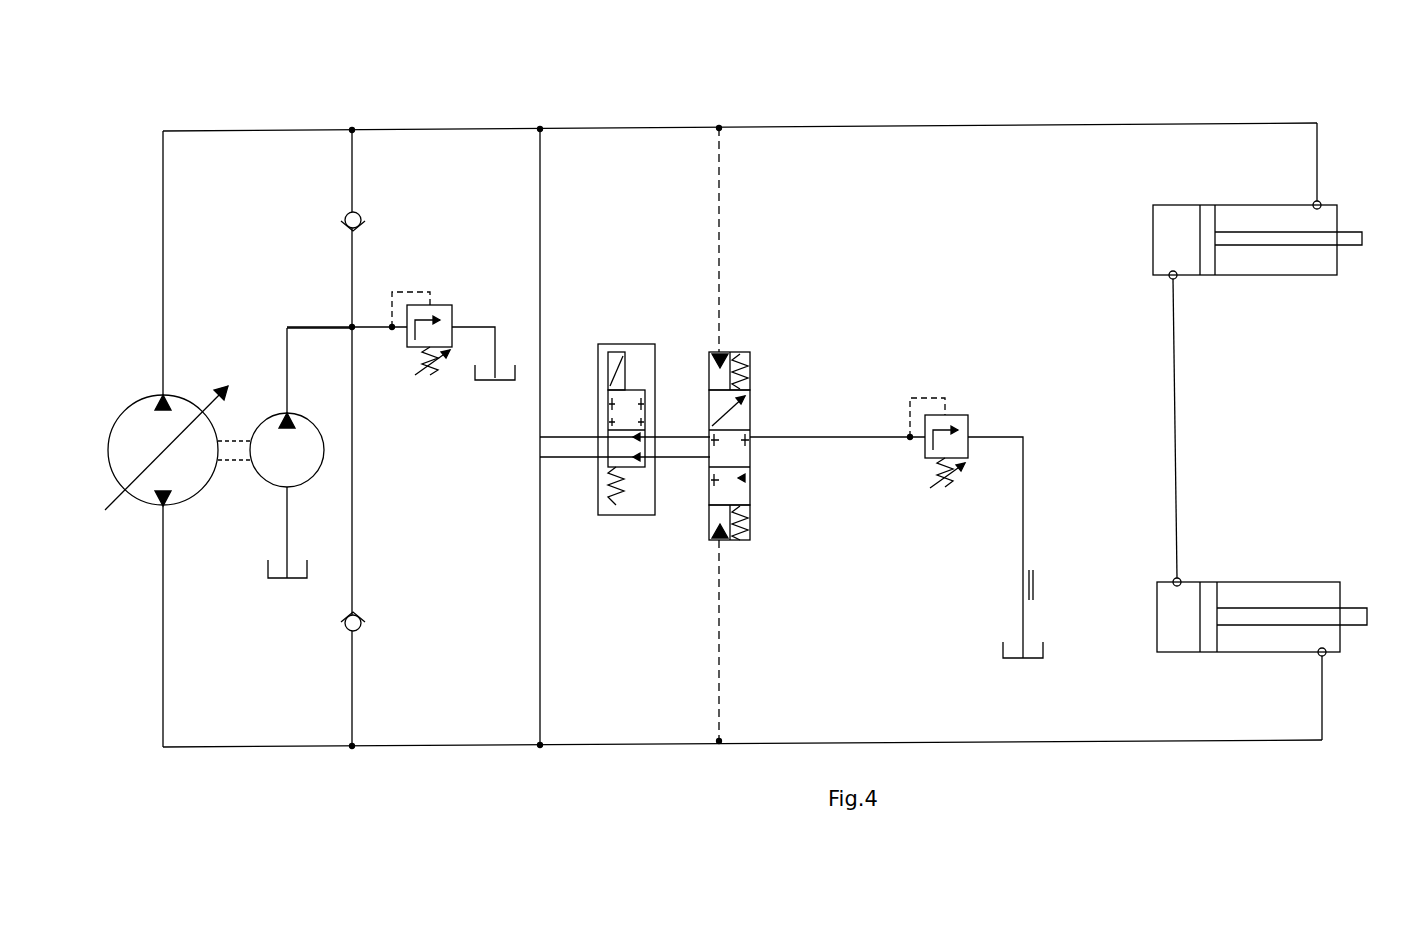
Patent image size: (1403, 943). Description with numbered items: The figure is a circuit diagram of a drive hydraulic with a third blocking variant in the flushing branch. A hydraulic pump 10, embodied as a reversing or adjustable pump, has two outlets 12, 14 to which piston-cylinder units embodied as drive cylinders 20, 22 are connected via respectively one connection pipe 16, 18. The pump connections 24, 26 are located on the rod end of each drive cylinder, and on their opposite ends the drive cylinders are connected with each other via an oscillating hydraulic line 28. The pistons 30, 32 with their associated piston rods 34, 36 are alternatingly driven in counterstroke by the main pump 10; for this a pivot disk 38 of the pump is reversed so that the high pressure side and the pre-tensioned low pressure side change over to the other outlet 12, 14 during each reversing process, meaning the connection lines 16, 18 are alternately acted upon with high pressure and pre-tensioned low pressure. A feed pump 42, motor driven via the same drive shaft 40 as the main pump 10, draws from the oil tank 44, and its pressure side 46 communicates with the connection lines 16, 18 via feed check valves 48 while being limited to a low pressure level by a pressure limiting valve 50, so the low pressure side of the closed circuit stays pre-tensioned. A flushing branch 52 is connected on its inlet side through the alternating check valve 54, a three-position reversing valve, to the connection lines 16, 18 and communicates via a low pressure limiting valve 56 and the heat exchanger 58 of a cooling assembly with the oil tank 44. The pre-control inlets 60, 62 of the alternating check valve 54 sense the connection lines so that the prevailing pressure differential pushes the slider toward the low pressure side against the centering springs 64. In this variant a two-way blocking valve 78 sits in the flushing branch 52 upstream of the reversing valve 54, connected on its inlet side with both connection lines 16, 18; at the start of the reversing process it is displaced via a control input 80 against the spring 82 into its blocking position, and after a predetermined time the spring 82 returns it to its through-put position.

The hydraulic pump 10 is at (176, 420).
The outlet 12 is at (162, 394).
The outlet 14 is at (163, 505).
The connection pipe 16 is at (278, 131).
The connection pipe 18 is at (216, 746).
The drive cylinder 20 is at (1258, 242).
The drive cylinder 22 is at (1270, 609).
The pump connection 24 is at (1320, 202).
The pump connection 26 is at (1324, 656).
The oscillating hydraulic line 28 is at (1176, 422).
The piston 30 is at (1210, 262).
The piston 32 is at (1210, 598).
The piston rod 34 is at (1312, 238).
The piston rod 36 is at (1313, 580).
The pivot disk 38 is at (205, 408).
The drive shaft 40 is at (232, 462).
The feed pump 42 is at (301, 452).
The oil tank 44 is at (300, 580).
The pressure side 46 is at (283, 412).
The feed check valve 48 is at (362, 212).
The pressure limiting valve 50 is at (452, 323).
The flushing branch 52 is at (840, 434).
The alternating check valve 54 is at (756, 448).
The low pressure limiting valve 56 is at (957, 412).
The heat exchanger 58 is at (1037, 598).
The pre-control inlet 60 is at (716, 378).
The pre-control inlet 62 is at (720, 520).
The centering spring 64 is at (748, 362).
The two-way blocking valve 78 is at (640, 444).
The control input 80 is at (615, 358).
The spring 82 is at (630, 515).